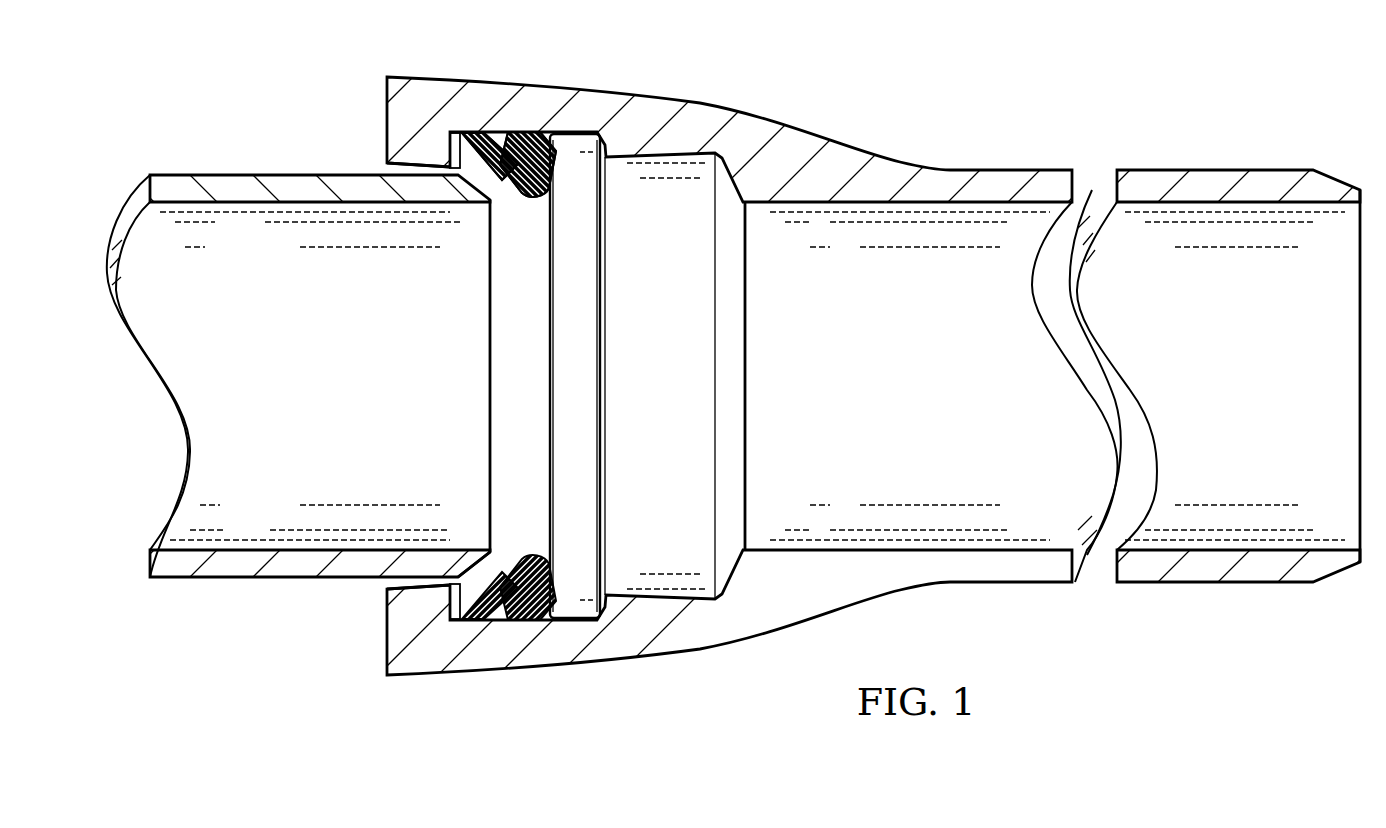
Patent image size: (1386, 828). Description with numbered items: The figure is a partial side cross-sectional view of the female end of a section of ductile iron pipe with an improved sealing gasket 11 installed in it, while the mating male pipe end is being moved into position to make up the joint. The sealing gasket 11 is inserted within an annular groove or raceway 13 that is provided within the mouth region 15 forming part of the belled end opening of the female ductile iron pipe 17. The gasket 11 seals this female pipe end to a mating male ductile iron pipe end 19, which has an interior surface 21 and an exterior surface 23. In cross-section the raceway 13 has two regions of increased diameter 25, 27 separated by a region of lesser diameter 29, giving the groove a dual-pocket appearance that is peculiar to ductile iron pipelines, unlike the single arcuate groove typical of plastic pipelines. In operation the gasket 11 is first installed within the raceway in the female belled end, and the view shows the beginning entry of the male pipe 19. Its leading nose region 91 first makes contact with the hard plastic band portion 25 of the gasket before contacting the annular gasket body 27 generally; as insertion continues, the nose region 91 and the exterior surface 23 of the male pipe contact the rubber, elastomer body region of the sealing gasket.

The sealing gasket 11 is at (508, 147).
The annular groove or raceway 13 is at (560, 159).
The mouth region 15 is at (390, 164).
The female ductile iron pipe 17 is at (775, 122).
The male ductile iron pipe end 19 is at (221, 175).
The interior surface 21 is at (256, 206).
The exterior surface 23 is at (297, 172).
The region of increased diameter 25 is at (450, 150).
The region of increased diameter 27 is at (565, 135).
The region of lesser diameter 29 is at (494, 152).
The leading nose region 91 is at (490, 563).